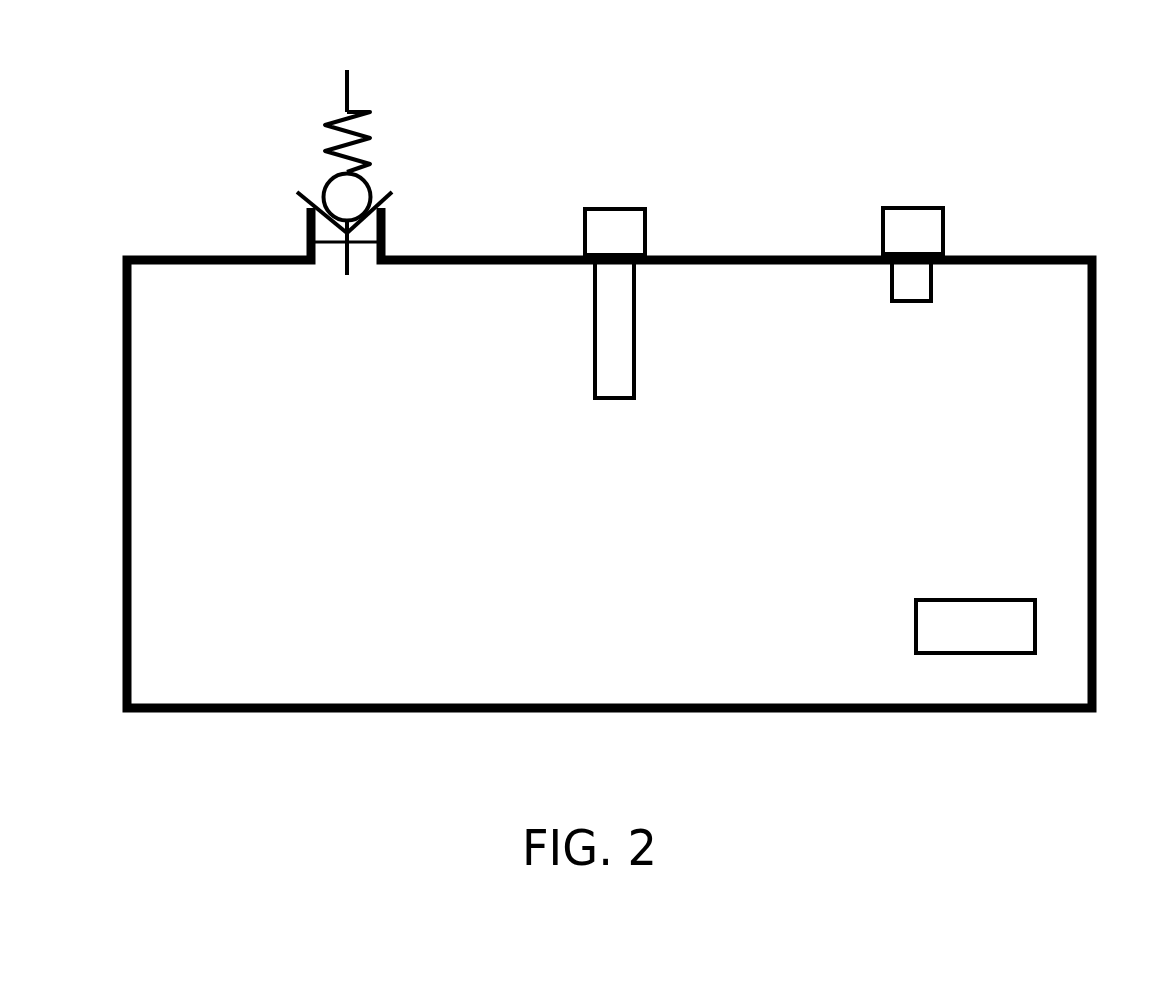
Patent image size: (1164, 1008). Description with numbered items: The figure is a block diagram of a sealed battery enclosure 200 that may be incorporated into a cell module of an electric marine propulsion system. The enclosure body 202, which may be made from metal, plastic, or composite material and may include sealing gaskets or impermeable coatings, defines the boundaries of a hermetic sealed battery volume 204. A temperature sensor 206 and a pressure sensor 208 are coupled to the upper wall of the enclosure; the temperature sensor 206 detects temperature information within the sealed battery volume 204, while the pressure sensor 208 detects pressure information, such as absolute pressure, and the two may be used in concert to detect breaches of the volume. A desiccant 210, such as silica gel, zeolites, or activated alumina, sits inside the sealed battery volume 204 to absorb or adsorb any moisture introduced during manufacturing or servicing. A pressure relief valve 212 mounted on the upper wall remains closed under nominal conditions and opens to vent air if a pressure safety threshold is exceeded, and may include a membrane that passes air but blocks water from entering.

The sealed battery enclosure 200 is at (92, 130).
The enclosure body 202 is at (755, 255).
The sealed battery volume 204 is at (1045, 392).
The temperature sensor 206 is at (647, 227).
The pressure sensor 208 is at (942, 231).
The desiccant 210 is at (913, 629).
The pressure relief valve 212 is at (323, 187).